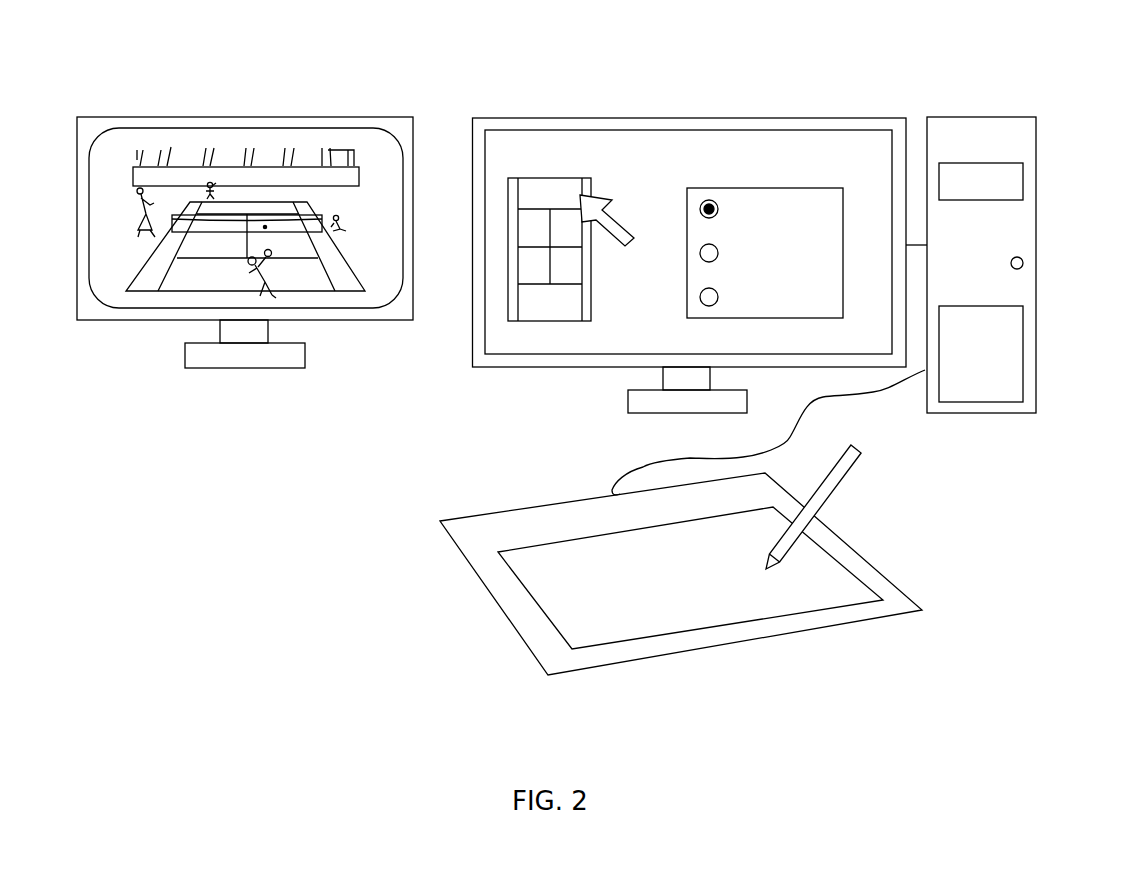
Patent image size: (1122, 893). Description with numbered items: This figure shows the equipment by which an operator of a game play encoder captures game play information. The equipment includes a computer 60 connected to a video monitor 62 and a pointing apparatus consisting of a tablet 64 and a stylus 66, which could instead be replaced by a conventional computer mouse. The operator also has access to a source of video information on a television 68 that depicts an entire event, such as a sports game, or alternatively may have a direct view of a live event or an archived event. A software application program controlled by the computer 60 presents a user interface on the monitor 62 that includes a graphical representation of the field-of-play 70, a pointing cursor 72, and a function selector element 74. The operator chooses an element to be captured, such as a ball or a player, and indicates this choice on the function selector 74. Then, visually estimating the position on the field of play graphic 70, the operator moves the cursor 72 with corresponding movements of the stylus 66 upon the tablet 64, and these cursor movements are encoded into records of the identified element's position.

The computer 60 is at (1038, 239).
The video monitor 62 is at (777, 117).
The tablet 64 is at (908, 600).
The stylus 66 is at (845, 478).
The television 68 is at (317, 117).
The graphical representation of the field-of-play 70 is at (542, 322).
The pointing cursor 72 is at (623, 228).
The function selector element 74 is at (837, 188).